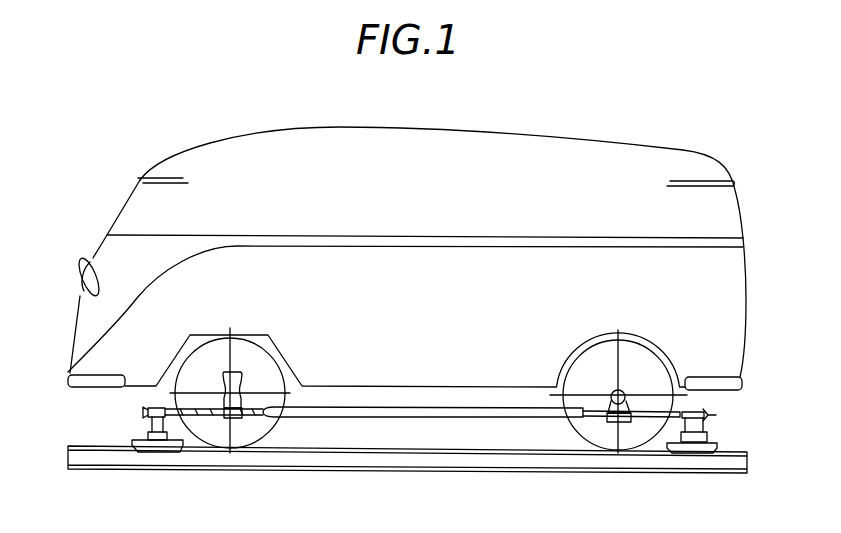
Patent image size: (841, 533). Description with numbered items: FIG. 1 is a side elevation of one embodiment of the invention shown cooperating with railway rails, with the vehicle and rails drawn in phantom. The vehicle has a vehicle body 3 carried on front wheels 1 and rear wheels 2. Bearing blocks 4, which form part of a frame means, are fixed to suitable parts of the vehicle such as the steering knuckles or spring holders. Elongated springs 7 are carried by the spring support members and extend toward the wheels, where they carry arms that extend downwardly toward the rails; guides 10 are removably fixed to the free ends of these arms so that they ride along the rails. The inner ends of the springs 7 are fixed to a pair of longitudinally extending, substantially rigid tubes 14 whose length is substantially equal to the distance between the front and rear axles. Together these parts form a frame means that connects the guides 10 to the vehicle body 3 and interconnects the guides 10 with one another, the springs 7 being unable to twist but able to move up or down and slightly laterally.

The front wheels 1 is at (222, 437).
The rear wheels 2 is at (612, 443).
The vehicle body 3 is at (620, 153).
The bearing blocks 4 is at (407, 488).
The elongated springs 7 is at (188, 415).
The guides 10 is at (138, 448).
The longitudinally extending rigid tubes 14 is at (385, 412).